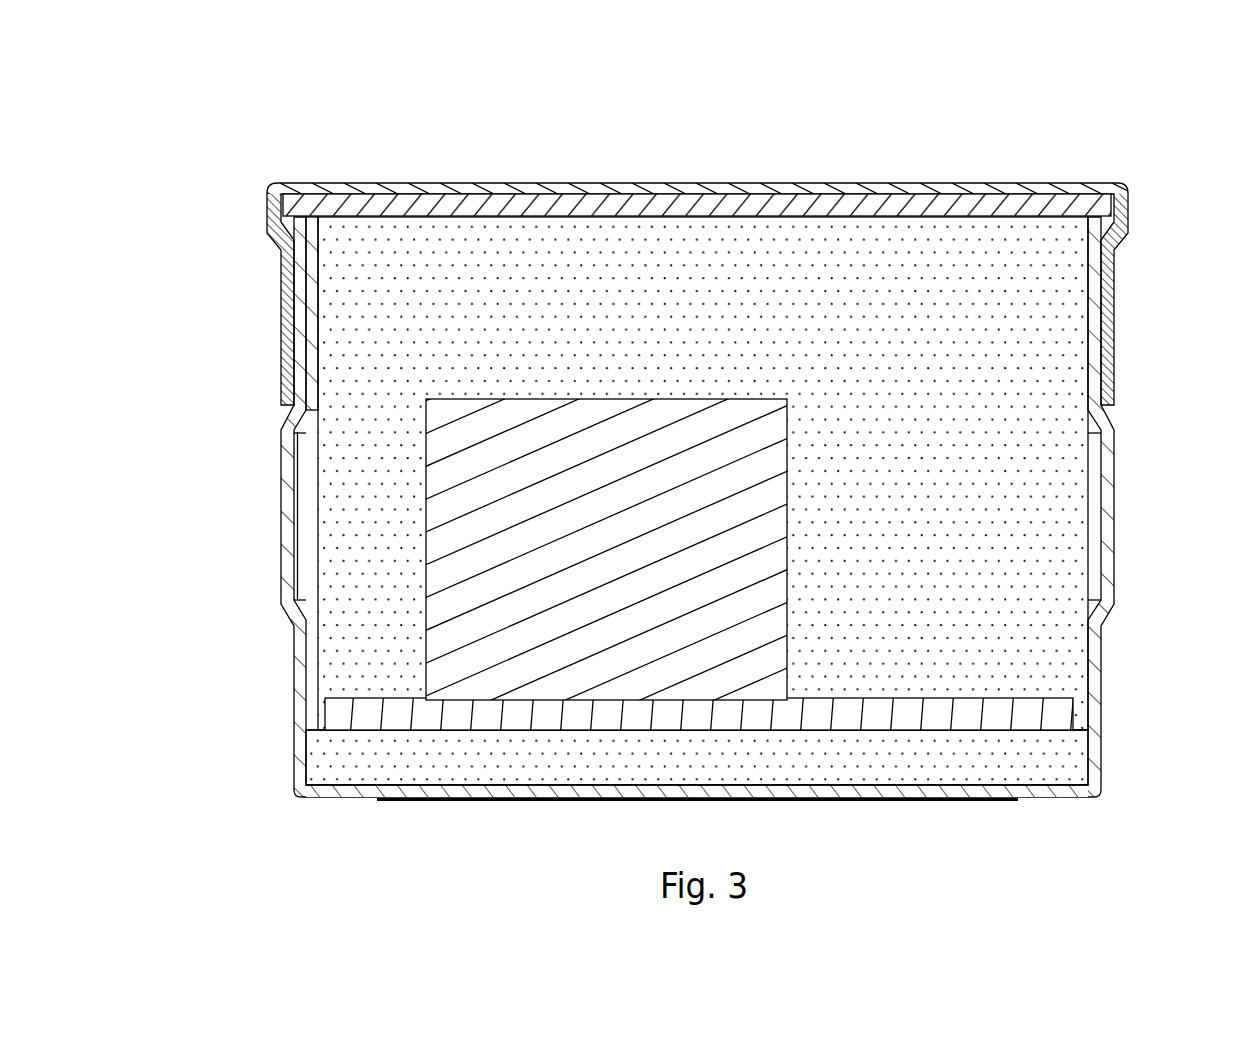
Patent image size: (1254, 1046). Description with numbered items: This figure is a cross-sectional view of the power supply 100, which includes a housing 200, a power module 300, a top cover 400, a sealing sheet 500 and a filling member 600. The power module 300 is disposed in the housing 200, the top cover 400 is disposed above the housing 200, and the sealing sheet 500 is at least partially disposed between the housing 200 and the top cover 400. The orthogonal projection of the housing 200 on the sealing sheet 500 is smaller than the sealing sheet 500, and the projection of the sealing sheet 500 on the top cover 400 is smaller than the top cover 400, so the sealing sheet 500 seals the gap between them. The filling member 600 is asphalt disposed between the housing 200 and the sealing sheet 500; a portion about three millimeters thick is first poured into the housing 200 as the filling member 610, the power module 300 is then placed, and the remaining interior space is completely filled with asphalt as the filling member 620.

The power supply 100 is at (250, 75).
The housing 200 is at (1101, 664).
The power module 300 is at (423, 730).
The top cover 400 is at (648, 183).
The sealing sheet 500 is at (530, 195).
The filling member 600 is at (590, 501).
The filling member 610 is at (347, 755).
The filling member 620 is at (343, 650).